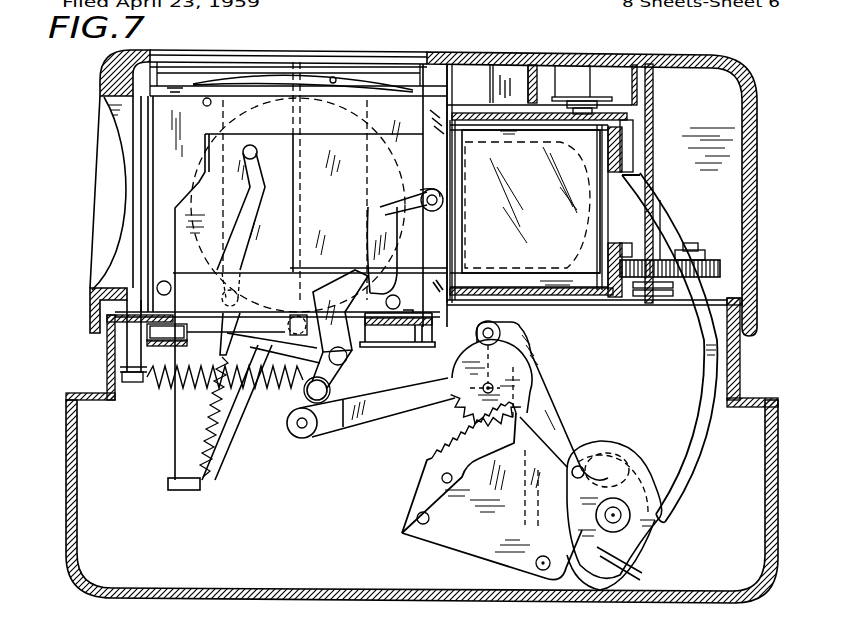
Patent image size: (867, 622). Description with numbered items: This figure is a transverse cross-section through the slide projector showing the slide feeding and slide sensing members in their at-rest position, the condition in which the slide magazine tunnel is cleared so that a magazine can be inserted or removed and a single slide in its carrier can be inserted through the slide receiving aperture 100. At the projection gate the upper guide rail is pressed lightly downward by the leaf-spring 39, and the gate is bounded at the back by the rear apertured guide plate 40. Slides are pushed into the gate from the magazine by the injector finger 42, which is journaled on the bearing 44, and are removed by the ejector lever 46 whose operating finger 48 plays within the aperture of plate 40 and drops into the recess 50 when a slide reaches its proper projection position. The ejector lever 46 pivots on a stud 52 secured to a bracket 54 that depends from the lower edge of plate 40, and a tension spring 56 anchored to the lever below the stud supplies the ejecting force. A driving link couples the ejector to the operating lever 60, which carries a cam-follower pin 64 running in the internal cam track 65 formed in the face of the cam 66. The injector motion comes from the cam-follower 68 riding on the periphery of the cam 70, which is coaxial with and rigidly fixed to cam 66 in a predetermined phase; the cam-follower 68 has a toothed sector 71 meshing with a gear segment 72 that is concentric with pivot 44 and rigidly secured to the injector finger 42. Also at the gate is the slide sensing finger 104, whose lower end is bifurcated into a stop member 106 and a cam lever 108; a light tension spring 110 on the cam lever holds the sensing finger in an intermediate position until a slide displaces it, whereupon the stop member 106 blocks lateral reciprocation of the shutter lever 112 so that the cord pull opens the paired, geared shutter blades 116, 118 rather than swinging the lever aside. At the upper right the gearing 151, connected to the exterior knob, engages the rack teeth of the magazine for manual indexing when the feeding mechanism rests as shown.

The leaf-spring 39 is at (333, 78).
The rear apertured guide plate 40 is at (208, 132).
The injector finger 42 is at (704, 392).
The bearing 44 is at (485, 387).
The ejector lever 46 is at (353, 268).
The operating finger 48 is at (430, 190).
The recess 50 is at (188, 199).
The stud 52 is at (342, 368).
The bracket 54 is at (358, 346).
The tension spring 56 is at (285, 405).
The operating lever 60 is at (533, 376).
The cam-follower pin 64 is at (596, 517).
The internal cam track 65 is at (620, 450).
The cam 66 is at (645, 470).
The cam-follower 68 is at (579, 466).
The cam 70 is at (642, 570).
The toothed sector 71 is at (432, 457).
The gear segment 72 is at (455, 405).
The slide receiving aperture 100 is at (96, 208).
The slide sensing finger 104 is at (256, 178).
The stop member 106 is at (222, 292).
The cam lever 108 is at (220, 343).
The light tension spring 110 is at (197, 437).
The shutter lever 112 is at (172, 342).
The shutter blade 116 is at (290, 209).
The shutter blade 118 is at (345, 171).
The gearing 151 is at (718, 265).